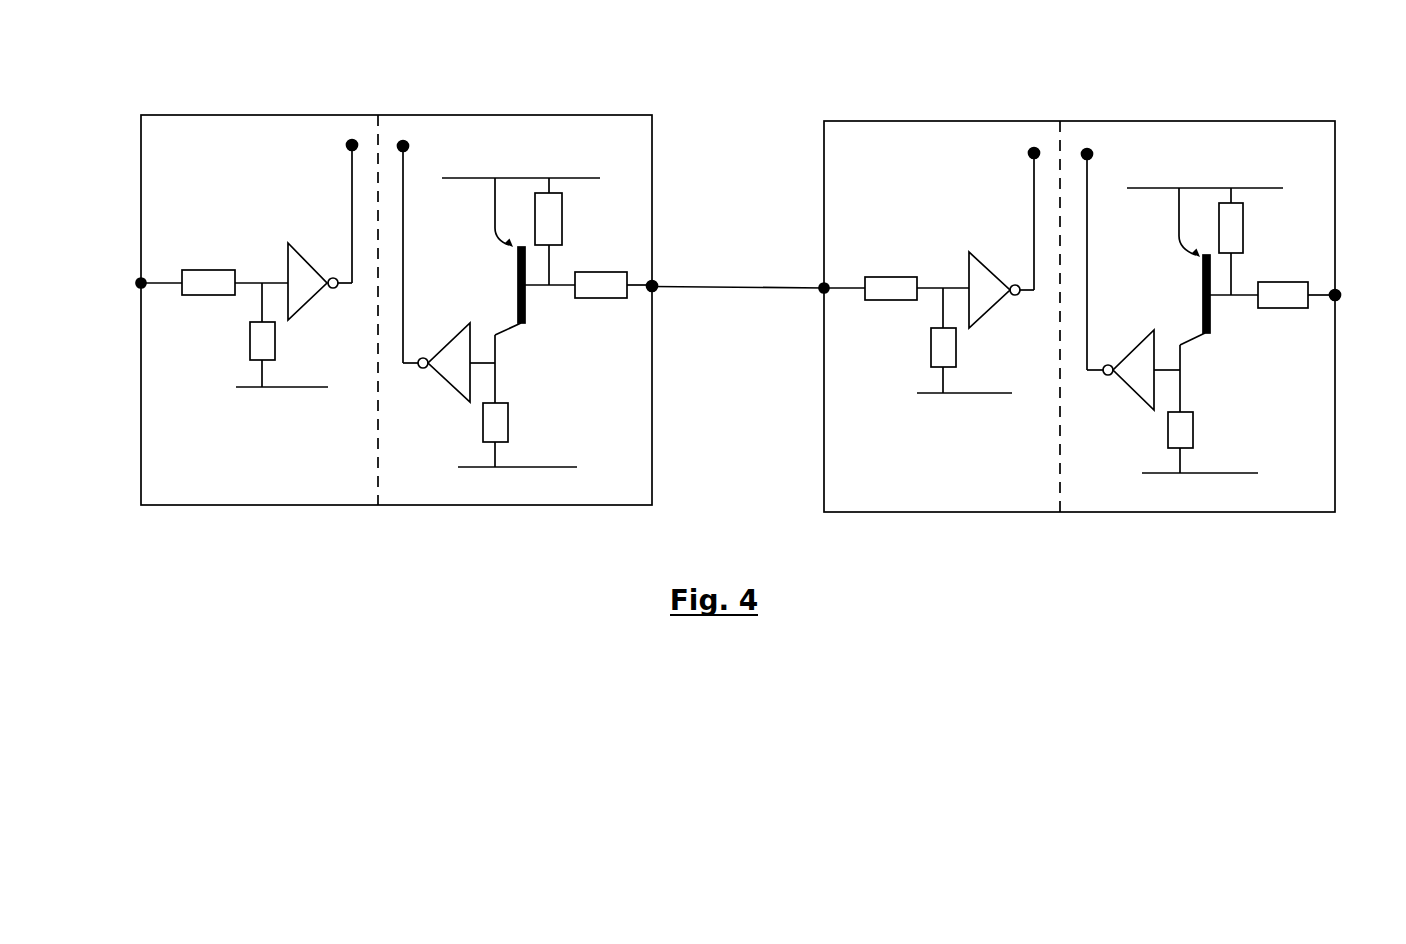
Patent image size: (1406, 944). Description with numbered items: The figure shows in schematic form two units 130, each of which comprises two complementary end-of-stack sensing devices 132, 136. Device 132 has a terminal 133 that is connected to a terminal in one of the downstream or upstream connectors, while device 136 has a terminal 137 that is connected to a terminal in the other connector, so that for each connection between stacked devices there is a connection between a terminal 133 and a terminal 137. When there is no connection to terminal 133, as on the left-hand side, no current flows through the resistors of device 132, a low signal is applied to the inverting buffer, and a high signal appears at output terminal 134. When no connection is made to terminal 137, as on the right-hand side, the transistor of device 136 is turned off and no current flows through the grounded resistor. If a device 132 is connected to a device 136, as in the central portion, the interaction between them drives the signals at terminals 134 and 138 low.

The unit 130 is at (394, 100).
The device 132 is at (297, 505).
The terminal 133 is at (138, 285).
The output terminal 134 is at (352, 145).
The device 136 is at (447, 505).
The terminal 137 is at (653, 287).
The terminal 138 is at (403, 146).